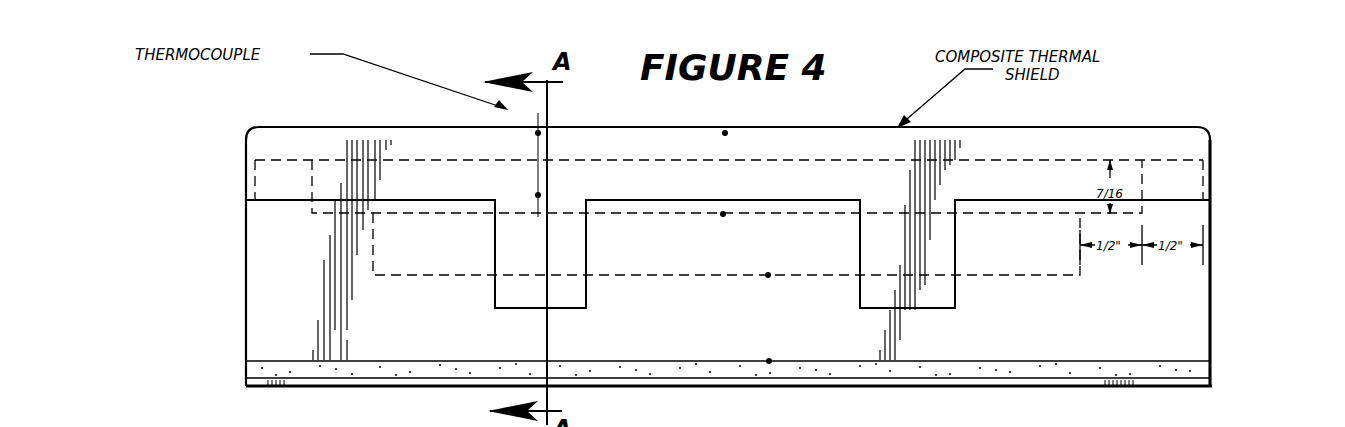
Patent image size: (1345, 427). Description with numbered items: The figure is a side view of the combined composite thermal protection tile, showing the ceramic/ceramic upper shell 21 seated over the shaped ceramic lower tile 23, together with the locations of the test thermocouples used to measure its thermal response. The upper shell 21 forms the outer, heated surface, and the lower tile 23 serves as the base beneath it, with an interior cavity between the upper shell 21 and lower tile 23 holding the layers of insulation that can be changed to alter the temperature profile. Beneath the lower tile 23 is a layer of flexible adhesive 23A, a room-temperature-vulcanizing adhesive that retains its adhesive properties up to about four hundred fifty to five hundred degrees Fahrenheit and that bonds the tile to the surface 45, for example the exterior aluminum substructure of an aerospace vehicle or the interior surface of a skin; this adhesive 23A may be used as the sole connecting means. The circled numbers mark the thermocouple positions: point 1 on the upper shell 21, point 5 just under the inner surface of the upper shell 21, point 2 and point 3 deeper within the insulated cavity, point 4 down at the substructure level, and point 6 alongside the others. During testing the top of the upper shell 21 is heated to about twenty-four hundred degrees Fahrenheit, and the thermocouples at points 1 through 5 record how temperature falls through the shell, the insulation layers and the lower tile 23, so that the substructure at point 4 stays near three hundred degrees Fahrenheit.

The thermocouple point 1 is at (734, 118).
The thermocouple point 2 is at (734, 225).
The thermocouple point 3 is at (779, 264).
The thermocouple point 4 is at (780, 349).
The thermocouple point 5 is at (525, 118).
The thermocouple point 6 is at (525, 188).
The upper shell 21 is at (1210, 142).
The lower tile 23 is at (1212, 295).
The layer of flexible adhesive 23A is at (1212, 368).
The surface 45 is at (1212, 380).